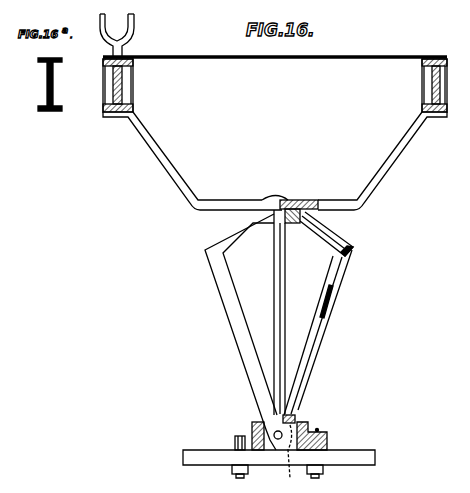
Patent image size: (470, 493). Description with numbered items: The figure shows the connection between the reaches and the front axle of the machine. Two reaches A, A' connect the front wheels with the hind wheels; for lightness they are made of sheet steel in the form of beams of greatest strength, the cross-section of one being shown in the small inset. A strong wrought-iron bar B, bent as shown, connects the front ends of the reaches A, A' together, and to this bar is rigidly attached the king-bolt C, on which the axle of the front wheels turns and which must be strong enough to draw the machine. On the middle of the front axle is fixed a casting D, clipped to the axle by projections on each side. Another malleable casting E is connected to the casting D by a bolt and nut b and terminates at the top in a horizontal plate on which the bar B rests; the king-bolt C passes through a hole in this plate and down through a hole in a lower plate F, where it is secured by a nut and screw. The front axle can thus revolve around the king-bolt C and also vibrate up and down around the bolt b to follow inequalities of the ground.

In FIG. 16A, the reach A is at (45, 84).
In FIG. 16, the reach A is at (107, 85).
In FIG. 16, the reach A' is at (444, 85).
In FIG. 16, the wrought-iron bar B is at (175, 154).
In FIG. 16, the king-bolt C is at (286, 312).
In FIG. 16, the malleable casting E is at (276, 315).
In FIG. 16, the casting D is at (250, 420).
In FIG. 16, the plate F is at (300, 414).
In FIG. 16, the bolt and nut b is at (289, 458).